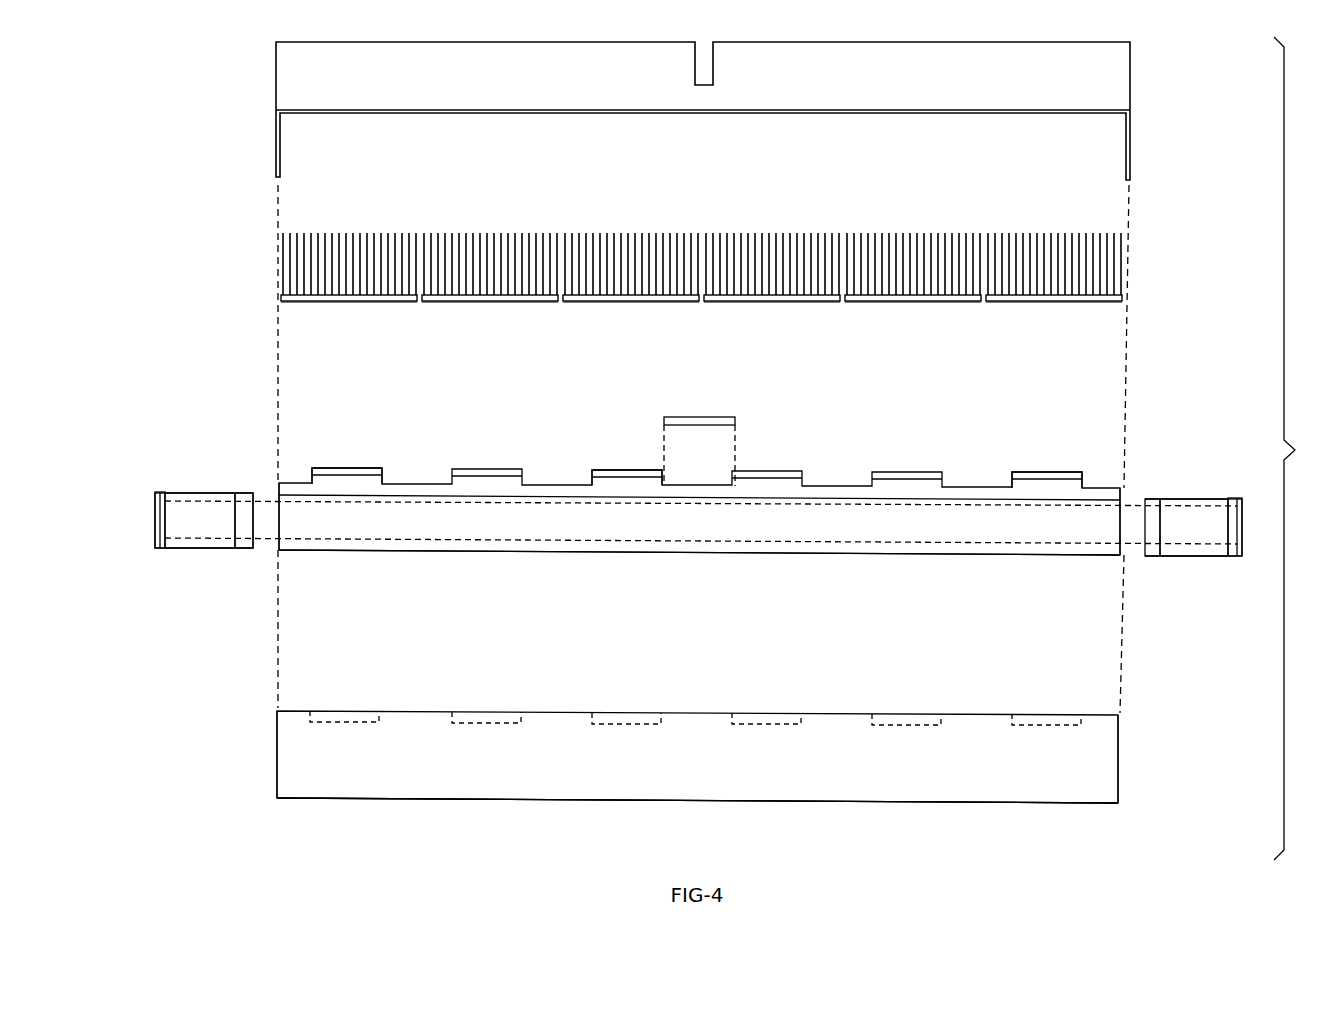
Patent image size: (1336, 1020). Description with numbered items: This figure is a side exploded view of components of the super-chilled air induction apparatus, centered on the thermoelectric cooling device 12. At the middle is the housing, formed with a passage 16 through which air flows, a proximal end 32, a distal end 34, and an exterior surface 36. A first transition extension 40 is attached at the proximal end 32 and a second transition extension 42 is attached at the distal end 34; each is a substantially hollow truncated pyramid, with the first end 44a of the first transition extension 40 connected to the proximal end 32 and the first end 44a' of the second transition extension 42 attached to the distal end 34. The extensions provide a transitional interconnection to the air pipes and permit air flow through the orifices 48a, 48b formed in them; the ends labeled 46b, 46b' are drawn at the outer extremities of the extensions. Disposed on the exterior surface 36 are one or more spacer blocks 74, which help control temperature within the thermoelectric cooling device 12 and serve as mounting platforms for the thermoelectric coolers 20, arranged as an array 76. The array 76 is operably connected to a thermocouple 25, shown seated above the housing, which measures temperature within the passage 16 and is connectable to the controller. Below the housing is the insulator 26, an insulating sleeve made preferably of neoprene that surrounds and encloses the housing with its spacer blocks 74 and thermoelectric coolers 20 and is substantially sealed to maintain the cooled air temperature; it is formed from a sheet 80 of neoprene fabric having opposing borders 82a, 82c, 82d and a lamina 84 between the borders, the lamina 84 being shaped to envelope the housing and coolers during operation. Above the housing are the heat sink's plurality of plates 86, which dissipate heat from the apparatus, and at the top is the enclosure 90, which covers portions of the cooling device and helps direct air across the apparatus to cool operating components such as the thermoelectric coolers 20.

The thermoelectric cooling device 12 is at (1306, 460).
The passage 16 is at (920, 533).
The thermoelectric cooler 20 is at (465, 468).
The thermocouple 25 is at (685, 416).
The insulator 26 is at (985, 714).
The proximal end 32 is at (278, 533).
The distal end 34 is at (1122, 548).
The exterior surface 36 is at (363, 543).
The first transition extension 40 is at (190, 550).
The second transition extension 42 is at (1183, 557).
The first end 44a is at (288, 481).
The first end 44a' is at (1113, 491).
The connector terminal 46b is at (122, 547).
The connector terminal 46b' is at (1252, 555).
The orifice 48a is at (185, 523).
The orifice 48b is at (1213, 532).
The spacer block 74 is at (938, 487).
The array 76 is at (612, 469).
The sheet 80 is at (363, 765).
The border 82a is at (1118, 758).
The border 82c is at (273, 757).
The border 82d is at (567, 765).
The lamina 84 is at (877, 763).
The plate 86 is at (1127, 255).
The enclosure 90 is at (878, 113).